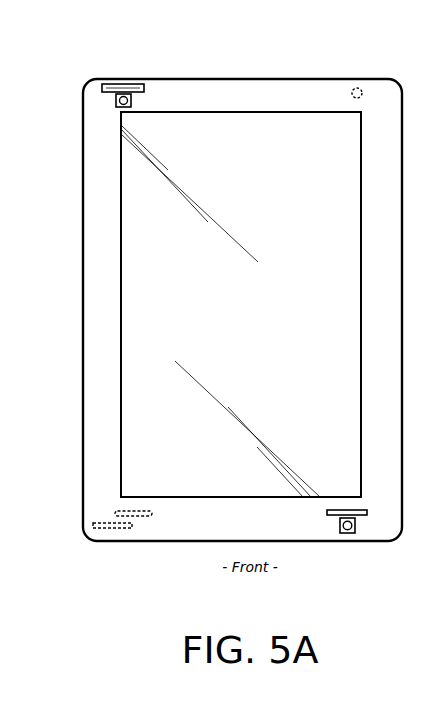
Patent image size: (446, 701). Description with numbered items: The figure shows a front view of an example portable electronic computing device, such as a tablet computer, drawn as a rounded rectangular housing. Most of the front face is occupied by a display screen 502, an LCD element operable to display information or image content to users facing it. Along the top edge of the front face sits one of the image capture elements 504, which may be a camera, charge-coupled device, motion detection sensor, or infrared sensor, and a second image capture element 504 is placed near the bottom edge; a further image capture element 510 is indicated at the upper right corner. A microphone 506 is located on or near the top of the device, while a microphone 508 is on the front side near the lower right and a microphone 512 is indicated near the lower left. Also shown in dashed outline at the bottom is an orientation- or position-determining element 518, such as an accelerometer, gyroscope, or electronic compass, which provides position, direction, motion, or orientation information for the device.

The display screen 502 is at (121, 224).
The image capture element 504 is at (115, 101).
The microphone 506 is at (131, 84).
The microphone 508 is at (360, 515).
The image capture element 510 is at (355, 88).
The microphone 512 is at (135, 517).
The orientation- or position-determining element 518 is at (110, 529).